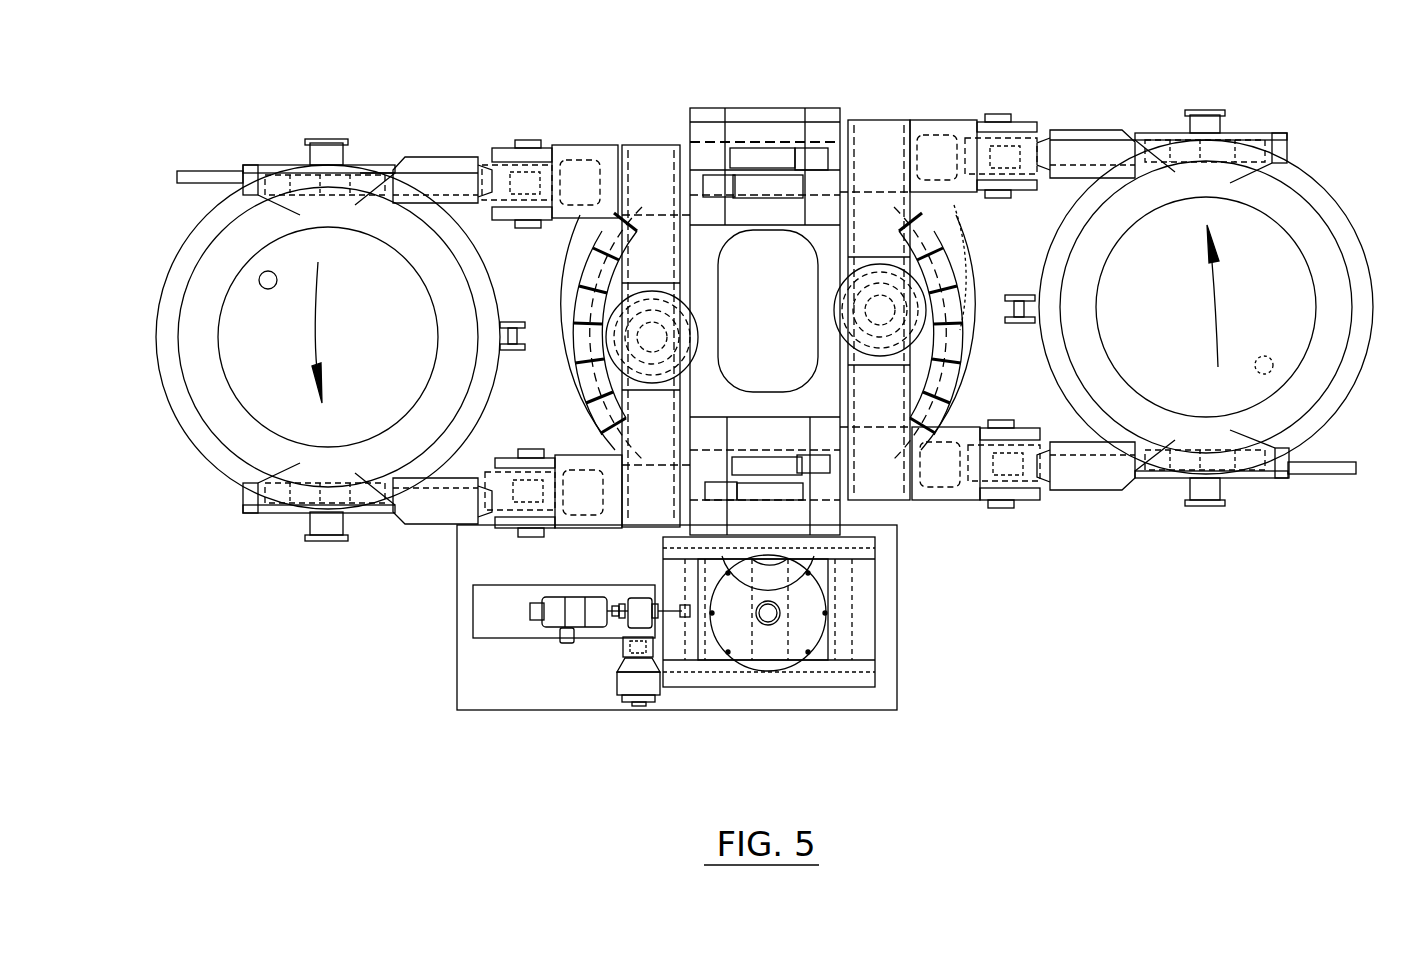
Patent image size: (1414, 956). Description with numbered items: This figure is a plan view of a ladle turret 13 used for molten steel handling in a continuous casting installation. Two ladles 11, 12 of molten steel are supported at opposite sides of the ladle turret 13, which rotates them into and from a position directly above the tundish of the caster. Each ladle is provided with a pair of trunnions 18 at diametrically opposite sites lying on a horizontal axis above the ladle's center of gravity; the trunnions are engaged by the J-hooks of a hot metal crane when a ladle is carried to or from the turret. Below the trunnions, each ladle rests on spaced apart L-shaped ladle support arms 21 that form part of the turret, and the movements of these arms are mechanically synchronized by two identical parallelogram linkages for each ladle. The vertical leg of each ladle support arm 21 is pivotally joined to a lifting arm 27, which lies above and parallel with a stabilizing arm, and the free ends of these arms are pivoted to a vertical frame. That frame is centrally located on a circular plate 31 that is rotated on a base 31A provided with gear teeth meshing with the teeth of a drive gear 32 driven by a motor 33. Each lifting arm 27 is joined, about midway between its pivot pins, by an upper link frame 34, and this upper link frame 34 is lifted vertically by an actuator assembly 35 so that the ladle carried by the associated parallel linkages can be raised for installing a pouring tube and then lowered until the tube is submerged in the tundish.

The ladle 11 is at (180, 257).
The ladle 12 is at (1365, 253).
The ladle turret 13 is at (793, 104).
The trunnions 18 is at (322, 152).
The ladle support arms 21 is at (377, 173).
The lifting arm 27 is at (577, 150).
The circular plate 31 is at (947, 318).
The base 31A is at (955, 372).
The drive gear 32 is at (775, 555).
The motor 33 is at (558, 613).
The upper link frame 34 is at (637, 267).
The actuator assembly 35 is at (652, 337).